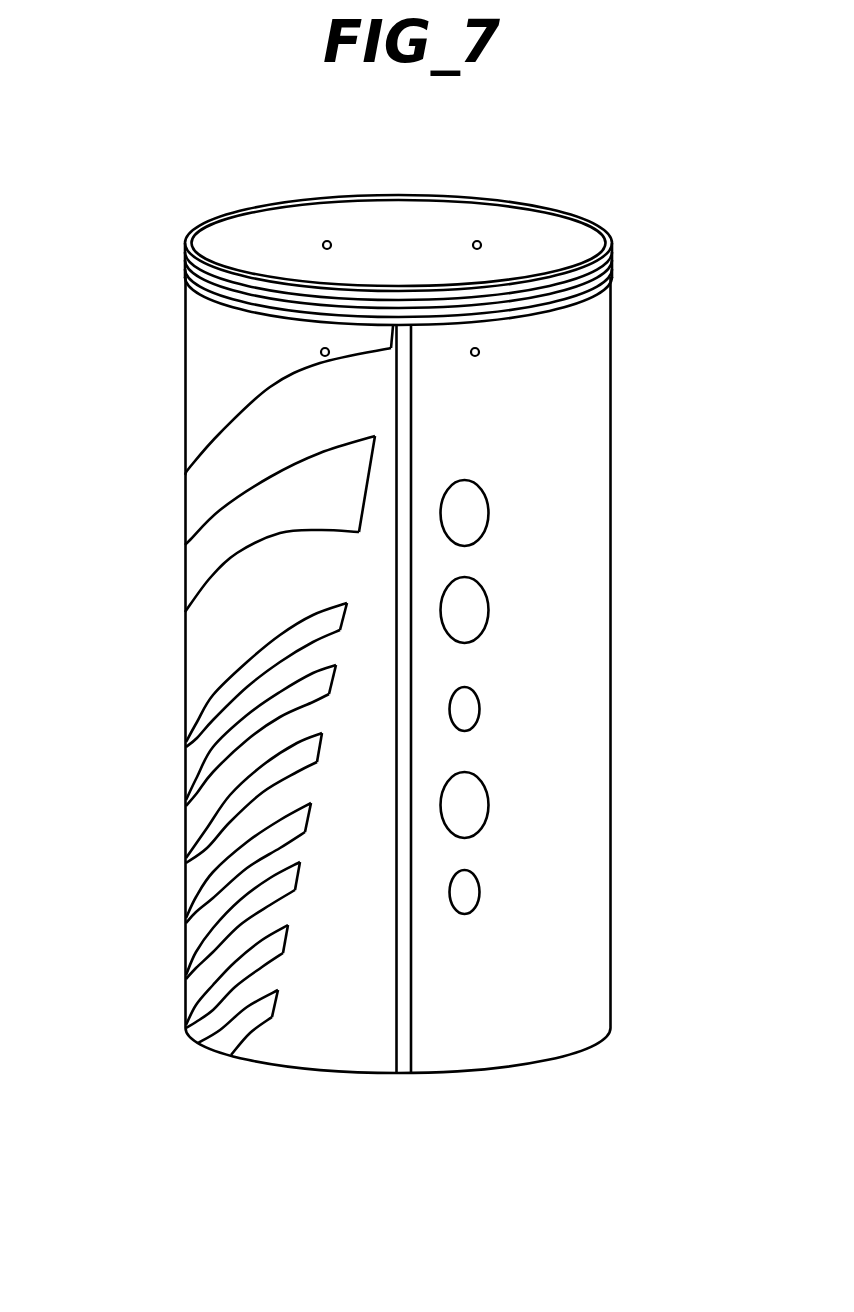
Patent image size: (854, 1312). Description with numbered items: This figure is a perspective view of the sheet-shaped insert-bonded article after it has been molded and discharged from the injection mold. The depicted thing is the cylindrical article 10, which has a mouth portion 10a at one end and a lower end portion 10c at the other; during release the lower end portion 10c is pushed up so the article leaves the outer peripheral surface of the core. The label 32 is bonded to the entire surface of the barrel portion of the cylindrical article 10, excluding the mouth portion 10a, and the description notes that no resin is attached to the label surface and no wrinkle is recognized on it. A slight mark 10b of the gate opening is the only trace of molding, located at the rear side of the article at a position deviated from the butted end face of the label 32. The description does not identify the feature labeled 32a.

The cylindrical article 10 is at (172, 515).
The mouth portion 10a is at (185, 263).
The mark of the gate opening 10b is at (326, 241).
The lower end portion 10c is at (280, 1067).
The label 32 is at (580, 750).
The slit strip 32a is at (557, 295).